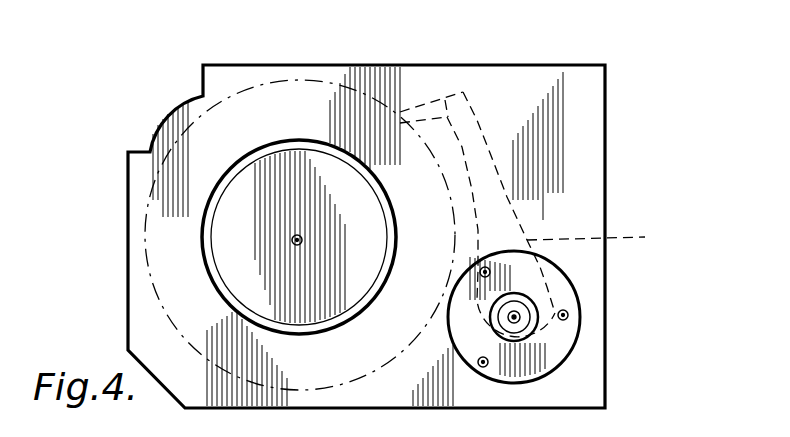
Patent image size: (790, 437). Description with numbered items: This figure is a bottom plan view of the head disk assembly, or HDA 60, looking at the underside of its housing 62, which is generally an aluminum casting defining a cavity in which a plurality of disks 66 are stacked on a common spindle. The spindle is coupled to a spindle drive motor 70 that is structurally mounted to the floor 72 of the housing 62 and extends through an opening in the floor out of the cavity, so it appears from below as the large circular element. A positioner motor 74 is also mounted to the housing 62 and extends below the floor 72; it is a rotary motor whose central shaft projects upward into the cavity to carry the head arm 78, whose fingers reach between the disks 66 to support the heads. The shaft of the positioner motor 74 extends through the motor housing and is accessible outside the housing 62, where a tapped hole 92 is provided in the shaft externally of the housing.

The head disk assembly 60 is at (377, 217).
The housing 62 is at (605, 142).
The disks 66 is at (242, 92).
The spindle drive motor 70 is at (203, 230).
The floor 72 is at (482, 77).
The positioner motor 74 is at (556, 317).
The head arm 78 is at (600, 237).
The tapped hole 92 is at (520, 312).